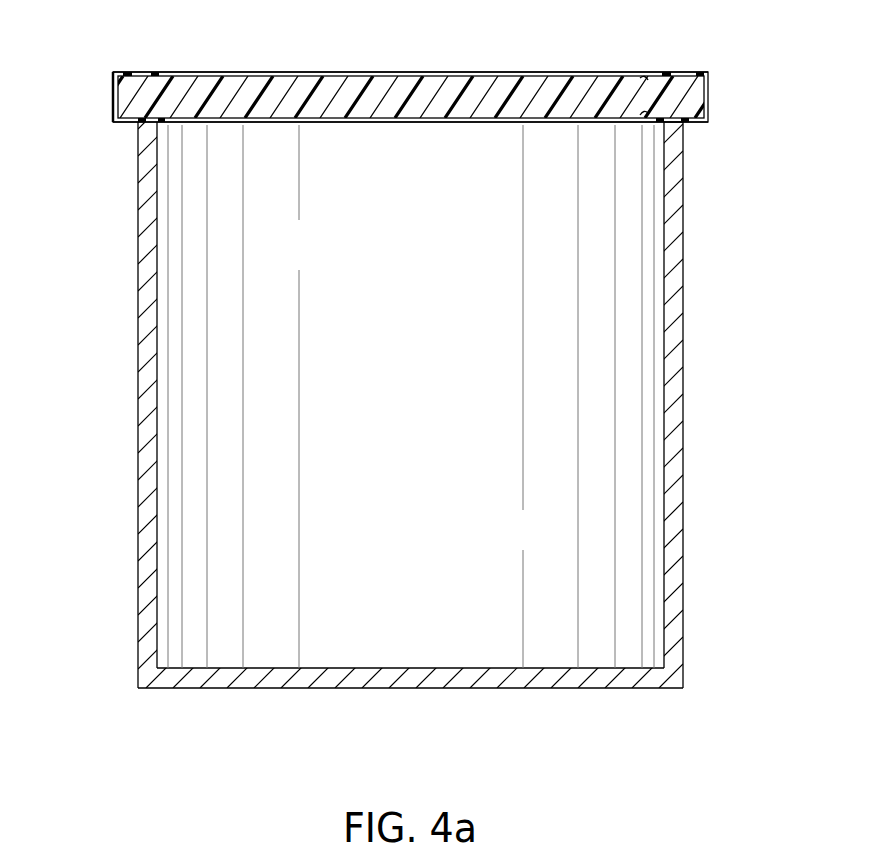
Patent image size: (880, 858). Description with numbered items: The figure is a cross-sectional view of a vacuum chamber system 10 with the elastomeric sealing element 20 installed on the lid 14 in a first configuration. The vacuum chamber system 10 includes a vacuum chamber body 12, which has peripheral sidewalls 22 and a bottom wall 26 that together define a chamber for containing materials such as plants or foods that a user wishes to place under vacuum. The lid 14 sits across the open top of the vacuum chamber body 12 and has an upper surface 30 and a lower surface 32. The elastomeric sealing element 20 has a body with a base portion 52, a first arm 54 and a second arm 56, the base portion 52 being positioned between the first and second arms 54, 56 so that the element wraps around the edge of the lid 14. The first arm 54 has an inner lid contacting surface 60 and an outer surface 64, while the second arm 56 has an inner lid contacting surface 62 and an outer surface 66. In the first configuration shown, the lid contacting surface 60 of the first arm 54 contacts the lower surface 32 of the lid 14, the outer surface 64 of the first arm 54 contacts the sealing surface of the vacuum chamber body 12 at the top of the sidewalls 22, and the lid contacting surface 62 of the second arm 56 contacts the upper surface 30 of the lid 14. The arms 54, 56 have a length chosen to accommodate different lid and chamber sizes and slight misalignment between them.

The vacuum chamber system 10 is at (692, 412).
The vacuum chamber body 12 is at (126, 393).
The lid 14 is at (417, 82).
The elastomeric sealing element 20 is at (710, 98).
The peripheral sidewalls 22 is at (685, 493).
The bottom wall 26 is at (553, 690).
The upper surface 30 is at (325, 72).
The lower surface 32 is at (340, 123).
The base portion 52 is at (114, 97).
The first arm 54 is at (120, 123).
The second arm 56 is at (129, 73).
The lid contacting surface 60 is at (643, 112).
The lid contacting surface 62 is at (645, 82).
The outer surface 64 is at (695, 123).
The outer surface 66 is at (664, 73).